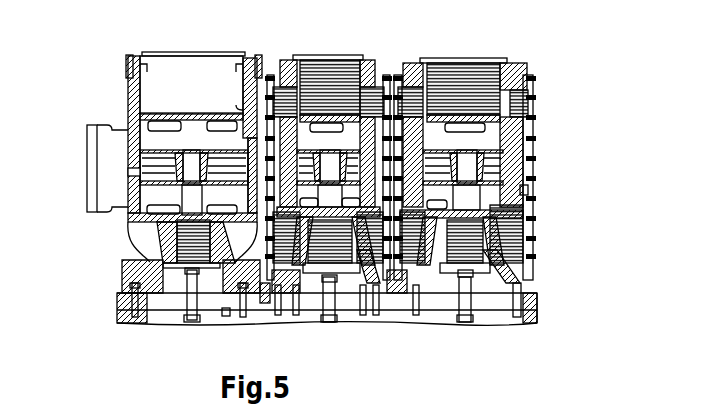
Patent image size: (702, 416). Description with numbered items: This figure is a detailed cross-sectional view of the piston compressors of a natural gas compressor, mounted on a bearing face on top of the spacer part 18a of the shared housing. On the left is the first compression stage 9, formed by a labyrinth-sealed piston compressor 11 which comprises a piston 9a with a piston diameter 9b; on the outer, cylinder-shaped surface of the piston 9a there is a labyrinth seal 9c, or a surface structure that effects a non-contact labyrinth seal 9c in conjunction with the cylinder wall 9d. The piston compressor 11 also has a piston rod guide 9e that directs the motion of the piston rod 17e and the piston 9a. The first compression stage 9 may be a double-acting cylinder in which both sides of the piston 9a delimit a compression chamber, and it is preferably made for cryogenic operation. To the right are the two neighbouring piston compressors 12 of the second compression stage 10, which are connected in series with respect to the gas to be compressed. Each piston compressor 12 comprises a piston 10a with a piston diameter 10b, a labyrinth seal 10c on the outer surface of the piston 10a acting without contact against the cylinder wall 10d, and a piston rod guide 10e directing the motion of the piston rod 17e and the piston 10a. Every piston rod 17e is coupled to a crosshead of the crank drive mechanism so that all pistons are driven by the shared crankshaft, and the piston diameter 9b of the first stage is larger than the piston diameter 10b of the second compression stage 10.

The first compression stage 9 is at (208, 138).
The piston 9a is at (140, 154).
The piston diameter 9b is at (162, 167).
The labyrinth seal 9c is at (122, 173).
The cylinder wall 9d is at (97, 212).
The piston rod guide 9e is at (193, 243).
The second compression stage 10 is at (548, 107).
The piston 10a is at (523, 166).
The piston diameter 10b is at (520, 192).
The labyrinth seal 10c is at (525, 143).
The cylinder wall 10d is at (523, 203).
The piston rod guide 10e is at (523, 250).
The piston compressor 11 is at (190, 44).
The piston compressor 12 is at (352, 45).
The piston rod 17e is at (190, 305).
The spacer part 18a is at (118, 300).